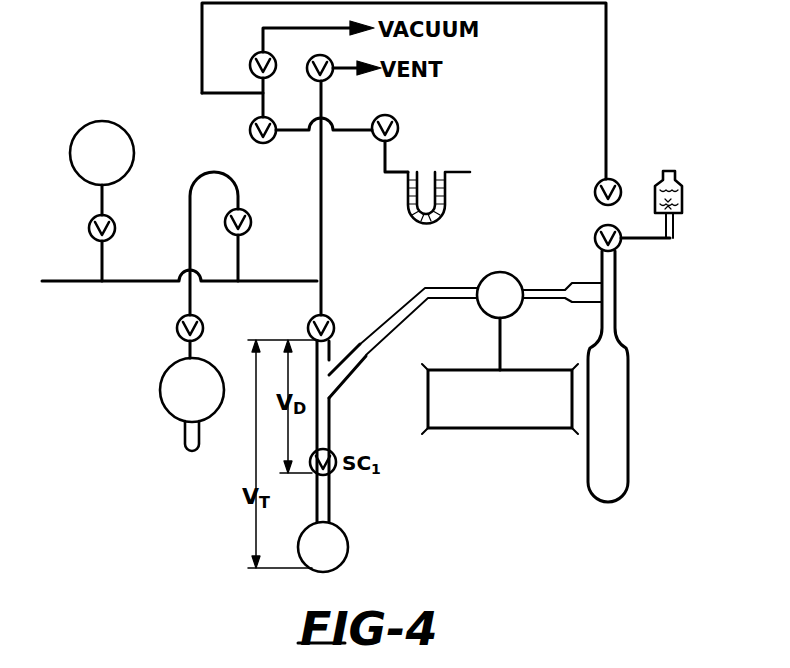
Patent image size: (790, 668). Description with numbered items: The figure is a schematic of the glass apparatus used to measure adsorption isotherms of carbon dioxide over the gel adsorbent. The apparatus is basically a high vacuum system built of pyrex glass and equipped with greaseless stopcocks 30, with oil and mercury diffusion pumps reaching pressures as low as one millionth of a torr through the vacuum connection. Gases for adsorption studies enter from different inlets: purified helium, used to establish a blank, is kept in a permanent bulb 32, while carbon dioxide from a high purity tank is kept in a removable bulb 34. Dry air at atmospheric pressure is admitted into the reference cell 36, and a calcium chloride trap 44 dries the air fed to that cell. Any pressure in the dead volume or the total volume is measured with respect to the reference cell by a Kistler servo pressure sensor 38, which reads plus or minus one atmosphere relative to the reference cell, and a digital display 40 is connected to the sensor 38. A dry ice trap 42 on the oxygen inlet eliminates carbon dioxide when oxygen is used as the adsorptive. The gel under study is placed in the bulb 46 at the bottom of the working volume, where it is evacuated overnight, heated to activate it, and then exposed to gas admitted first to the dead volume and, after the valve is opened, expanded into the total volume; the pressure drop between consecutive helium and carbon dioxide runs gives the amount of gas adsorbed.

The greaseless stopcocks 30 is at (150, 322).
The permanent bulb 32 is at (72, 146).
The removable bulb 34 is at (160, 391).
The reference cell 36 is at (628, 415).
The servo pressure sensor 38 is at (500, 272).
The digital display 40 is at (466, 428).
The dry ice trap 42 is at (406, 206).
The calcium chloride trap 44 is at (671, 168).
The bulb 46 is at (348, 545).